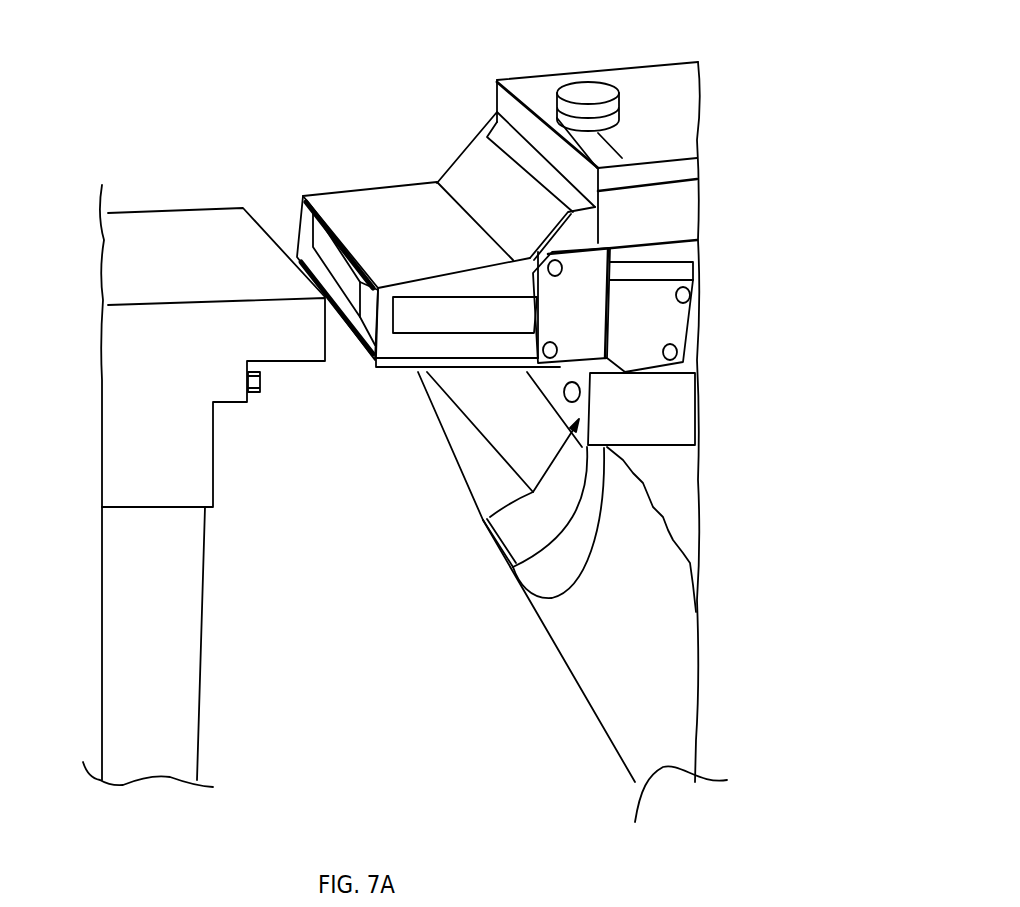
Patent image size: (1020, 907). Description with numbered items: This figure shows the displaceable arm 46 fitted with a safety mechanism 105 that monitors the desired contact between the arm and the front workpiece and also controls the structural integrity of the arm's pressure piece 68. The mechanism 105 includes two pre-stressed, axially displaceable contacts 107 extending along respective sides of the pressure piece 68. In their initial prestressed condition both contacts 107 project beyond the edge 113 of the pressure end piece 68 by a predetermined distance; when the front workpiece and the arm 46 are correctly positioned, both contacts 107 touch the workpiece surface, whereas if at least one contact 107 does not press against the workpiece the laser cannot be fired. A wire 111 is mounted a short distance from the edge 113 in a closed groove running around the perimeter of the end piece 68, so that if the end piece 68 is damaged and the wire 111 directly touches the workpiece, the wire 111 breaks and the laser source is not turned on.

The displaceable arm 46 is at (672, 100).
The pressure piece 68 is at (435, 182).
The safety mechanism 105 is at (368, 380).
The pre-stressed axially displaceable contact 107 is at (427, 320).
The wire 111 is at (302, 195).
The edge 113 is at (347, 327).